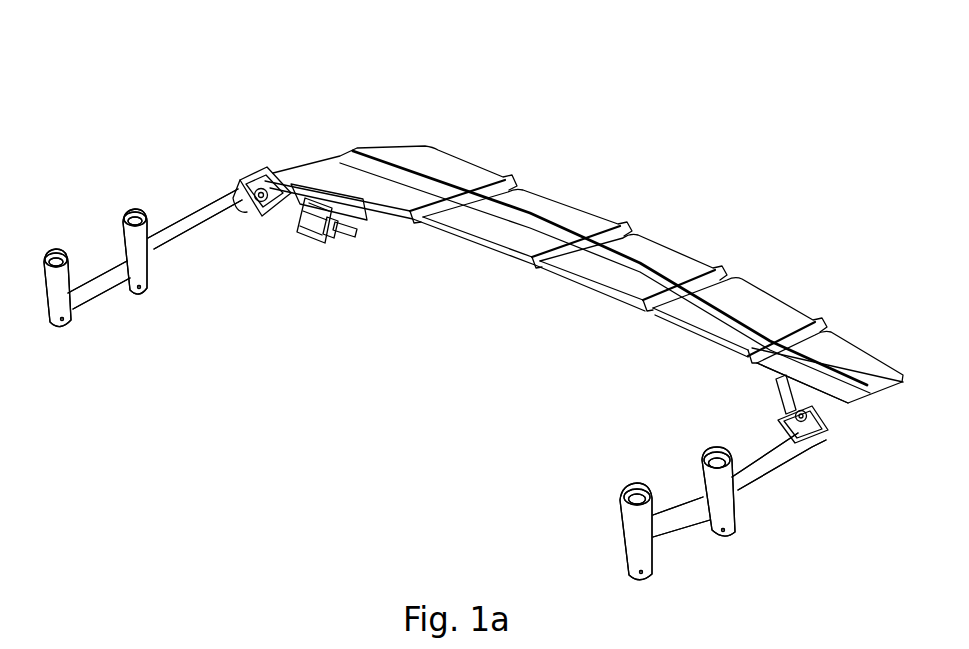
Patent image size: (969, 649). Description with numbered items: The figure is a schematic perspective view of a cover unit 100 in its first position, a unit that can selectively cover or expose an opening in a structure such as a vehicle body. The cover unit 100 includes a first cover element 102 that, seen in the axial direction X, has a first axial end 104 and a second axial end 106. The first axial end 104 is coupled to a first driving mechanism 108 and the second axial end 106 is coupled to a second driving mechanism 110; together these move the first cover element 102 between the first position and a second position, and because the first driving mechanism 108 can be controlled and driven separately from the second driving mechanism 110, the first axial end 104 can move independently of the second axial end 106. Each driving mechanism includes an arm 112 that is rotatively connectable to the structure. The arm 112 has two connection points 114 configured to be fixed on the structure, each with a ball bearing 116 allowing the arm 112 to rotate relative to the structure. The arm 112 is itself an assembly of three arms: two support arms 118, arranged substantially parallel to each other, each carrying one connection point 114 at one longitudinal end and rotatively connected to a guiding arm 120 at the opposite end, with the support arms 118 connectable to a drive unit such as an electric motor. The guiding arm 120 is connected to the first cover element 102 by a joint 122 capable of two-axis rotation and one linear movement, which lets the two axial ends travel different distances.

The cover unit 100 is at (229, 121).
The first cover element 102 is at (392, 170).
The first axial end 104 is at (329, 150).
The second axial end 106 is at (869, 400).
The first driving mechanism 108 is at (86, 214).
The second driving mechanism 110 is at (781, 536).
The arm 112 is at (143, 250).
The connection point 114 is at (709, 450).
The ball bearing 116 is at (389, 394).
The support arm 118 is at (389, 399).
The guiding arm 120 is at (487, 339).
The joint 122 is at (281, 216).